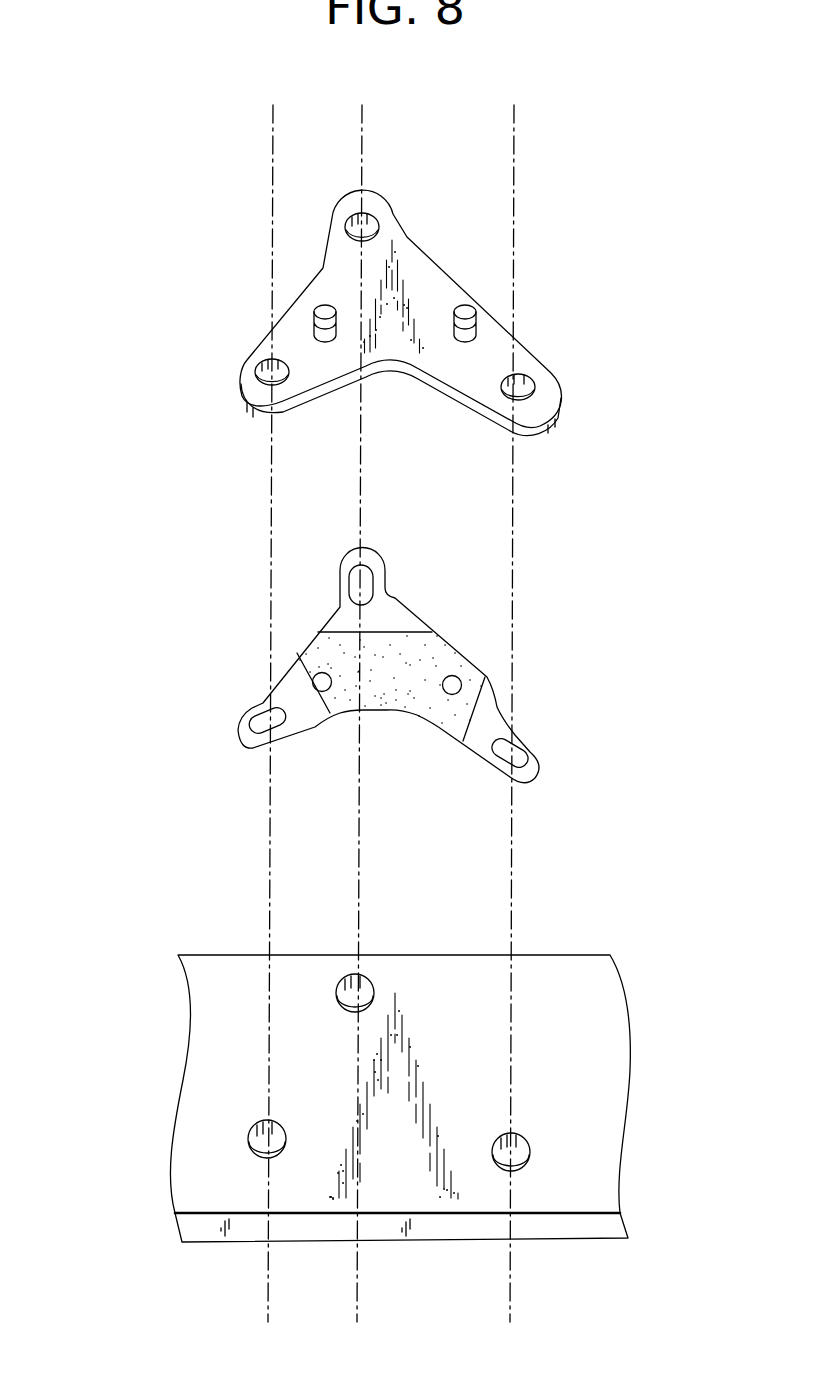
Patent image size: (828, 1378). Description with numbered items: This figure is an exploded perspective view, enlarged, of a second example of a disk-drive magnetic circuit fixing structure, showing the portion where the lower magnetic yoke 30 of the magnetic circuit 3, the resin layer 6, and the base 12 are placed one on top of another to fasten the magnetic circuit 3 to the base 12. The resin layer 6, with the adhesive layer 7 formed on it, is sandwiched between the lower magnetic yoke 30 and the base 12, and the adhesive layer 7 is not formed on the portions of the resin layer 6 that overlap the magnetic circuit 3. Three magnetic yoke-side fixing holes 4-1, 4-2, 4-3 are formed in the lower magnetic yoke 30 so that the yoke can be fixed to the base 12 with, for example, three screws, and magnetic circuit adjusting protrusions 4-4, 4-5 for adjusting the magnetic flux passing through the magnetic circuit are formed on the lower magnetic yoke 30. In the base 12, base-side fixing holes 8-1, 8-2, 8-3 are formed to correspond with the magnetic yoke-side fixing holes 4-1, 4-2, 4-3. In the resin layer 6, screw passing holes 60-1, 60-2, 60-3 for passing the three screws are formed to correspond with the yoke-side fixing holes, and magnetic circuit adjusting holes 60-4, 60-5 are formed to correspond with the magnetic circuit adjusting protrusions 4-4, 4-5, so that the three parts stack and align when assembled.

The magnetic circuit 3 is at (260, 236).
The lower magnetic yoke 30 is at (428, 290).
The magnetic yoke-side fixing hole 4-1 is at (537, 383).
The magnetic yoke-side fixing hole 4-2 is at (368, 215).
The magnetic yoke-side fixing hole 4-3 is at (257, 367).
The magnetic circuit adjusting protrusion 4-4 is at (313, 325).
The magnetic circuit adjusting protrusion 4-5 is at (473, 320).
The resin layer 6 is at (347, 615).
The adhesive layer 7 is at (430, 652).
The screw passing hole 60-1 is at (520, 752).
The screw passing hole 60-2 is at (363, 572).
The screw passing hole 60-3 is at (260, 723).
The magnetic circuit adjusting hole 60-4 is at (320, 678).
The magnetic circuit adjusting hole 60-5 is at (448, 687).
The base-side fixing hole 8-1 is at (528, 1148).
The base-side fixing hole 8-2 is at (354, 991).
The base-side fixing hole 8-3 is at (256, 1143).
The base 12 is at (556, 1180).